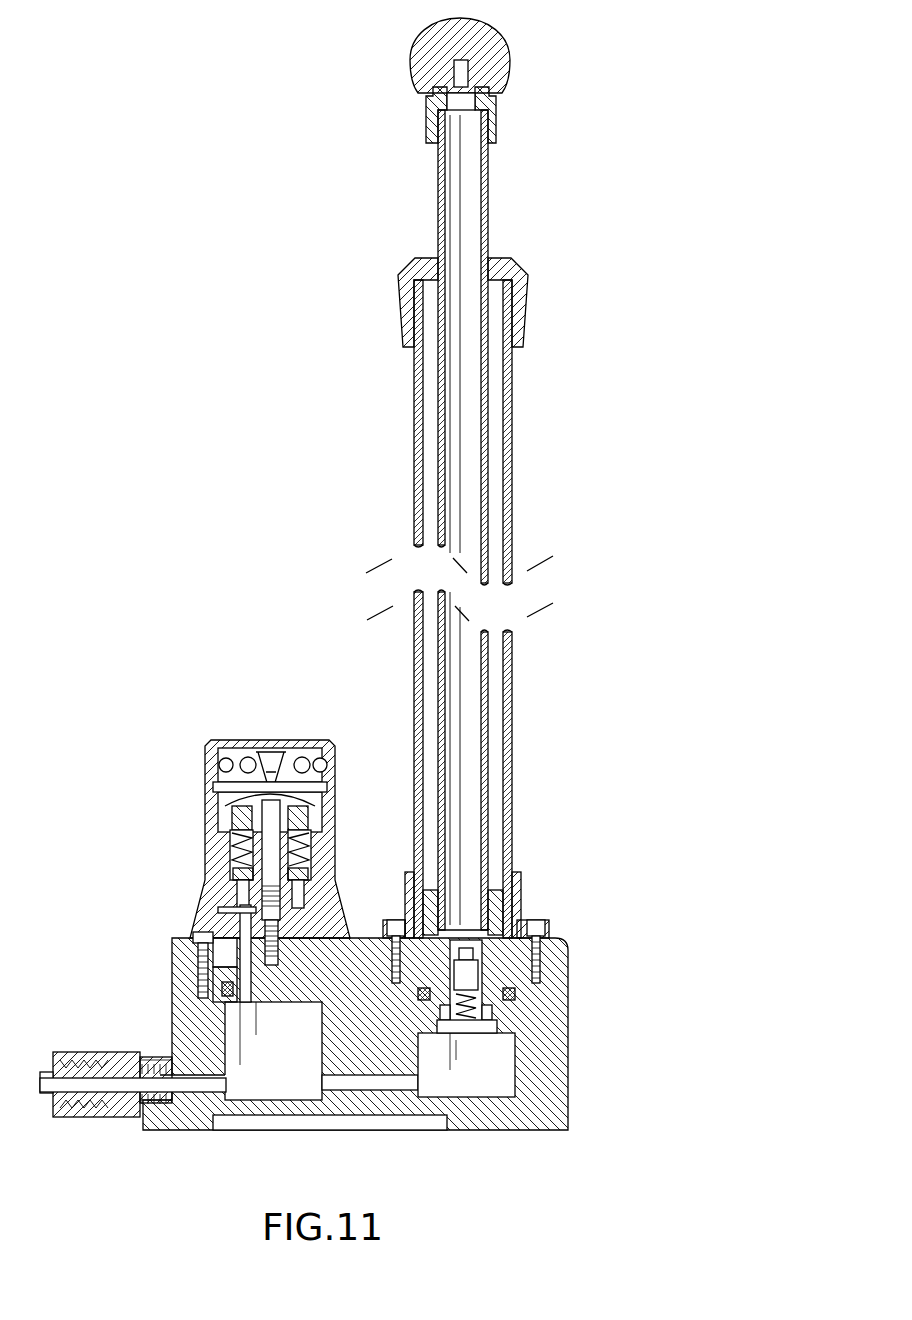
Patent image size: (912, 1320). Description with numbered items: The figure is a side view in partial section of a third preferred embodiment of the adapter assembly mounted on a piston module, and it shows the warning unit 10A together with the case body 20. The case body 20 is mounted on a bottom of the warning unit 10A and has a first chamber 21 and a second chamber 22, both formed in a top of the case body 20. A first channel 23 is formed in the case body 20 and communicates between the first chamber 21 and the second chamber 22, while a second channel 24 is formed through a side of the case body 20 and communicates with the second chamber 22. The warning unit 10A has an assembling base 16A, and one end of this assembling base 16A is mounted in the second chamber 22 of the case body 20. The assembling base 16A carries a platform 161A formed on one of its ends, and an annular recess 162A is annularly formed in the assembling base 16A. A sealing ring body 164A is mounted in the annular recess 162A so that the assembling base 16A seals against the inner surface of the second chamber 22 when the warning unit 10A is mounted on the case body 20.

The warning unit 10A is at (203, 735).
The platform 161A is at (222, 920).
The assembling base 16A is at (218, 953).
The sealing ring body 164A is at (232, 988).
The annular recess 162A is at (230, 988).
The case body 20 is at (502, 1121).
The first chamber 21 is at (505, 1063).
The second chamber 22 is at (290, 1082).
The first channel 23 is at (401, 1093).
The second channel 24 is at (197, 1086).